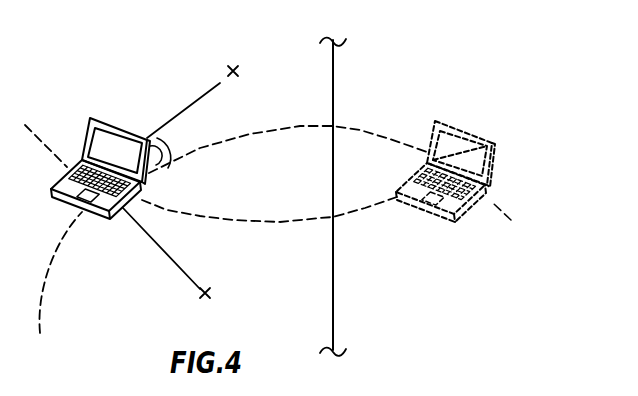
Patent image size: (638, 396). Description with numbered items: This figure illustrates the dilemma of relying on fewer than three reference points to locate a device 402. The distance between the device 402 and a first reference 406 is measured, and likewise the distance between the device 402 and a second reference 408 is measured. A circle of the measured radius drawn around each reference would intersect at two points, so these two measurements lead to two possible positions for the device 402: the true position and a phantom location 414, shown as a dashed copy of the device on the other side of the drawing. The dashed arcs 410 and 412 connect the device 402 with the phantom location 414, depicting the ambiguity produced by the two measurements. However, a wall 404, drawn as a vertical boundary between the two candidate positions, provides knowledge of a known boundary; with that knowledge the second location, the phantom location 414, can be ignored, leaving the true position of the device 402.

The device 402 is at (103, 118).
The wall 404 is at (333, 60).
The first reference 406 is at (227, 70).
The second reference 408 is at (200, 294).
The upper range arc 410 is at (345, 127).
The lower range arc 412 is at (343, 213).
The phantom location 414 is at (463, 130).